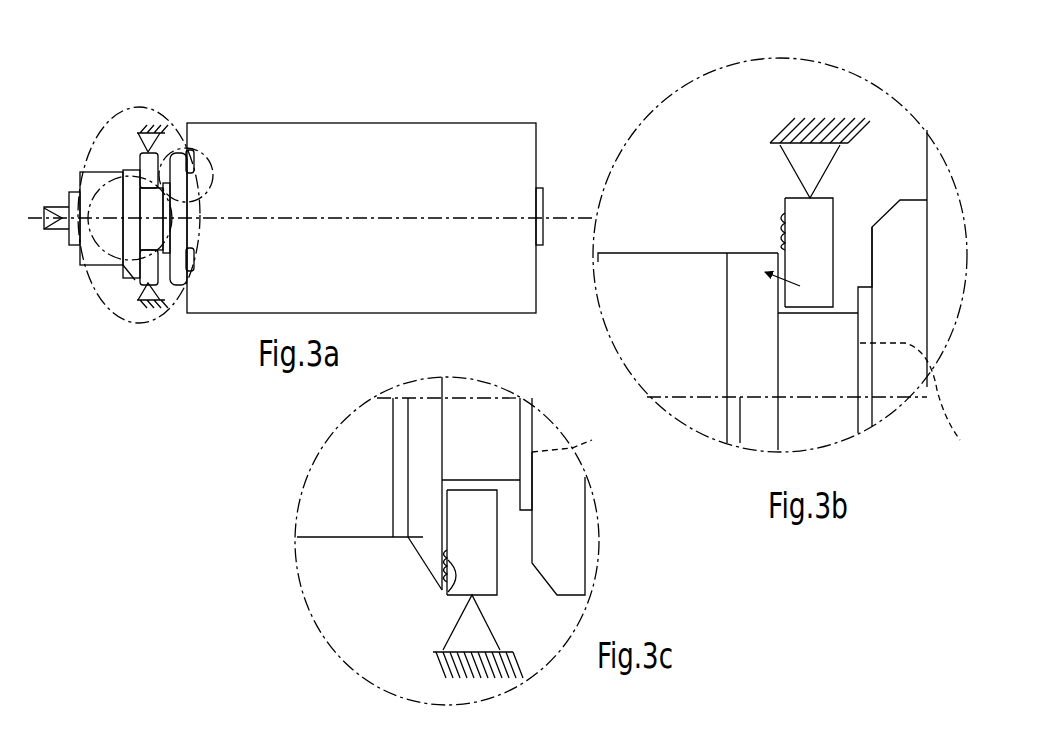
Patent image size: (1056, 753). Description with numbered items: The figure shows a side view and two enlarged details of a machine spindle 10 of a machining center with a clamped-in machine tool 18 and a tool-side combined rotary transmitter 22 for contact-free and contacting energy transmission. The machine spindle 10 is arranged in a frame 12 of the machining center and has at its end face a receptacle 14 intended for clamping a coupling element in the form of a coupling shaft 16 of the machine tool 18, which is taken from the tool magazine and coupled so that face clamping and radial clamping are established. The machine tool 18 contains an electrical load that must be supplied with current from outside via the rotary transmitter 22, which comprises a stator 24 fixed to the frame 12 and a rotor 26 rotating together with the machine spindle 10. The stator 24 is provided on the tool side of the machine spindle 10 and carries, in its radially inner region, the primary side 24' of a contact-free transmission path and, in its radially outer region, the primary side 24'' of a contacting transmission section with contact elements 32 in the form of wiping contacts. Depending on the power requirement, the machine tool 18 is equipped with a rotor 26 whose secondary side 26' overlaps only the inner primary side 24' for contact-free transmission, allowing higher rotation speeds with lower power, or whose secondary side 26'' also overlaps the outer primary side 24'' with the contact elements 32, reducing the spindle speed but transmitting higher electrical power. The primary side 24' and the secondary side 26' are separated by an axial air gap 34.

In FIG. 3A, the machine spindle 10 is at (281, 142).
In FIG. 3B, the machine spindle 10 is at (938, 230).
In FIG. 3C, the machine spindle 10 is at (590, 530).
In FIG. 3A, the frame 12 is at (149, 122).
In FIG. 3B, the frame 12 is at (812, 167).
In FIG. 3C, the frame 12 is at (468, 632).
In FIG. 3A, the receptacle 14 is at (186, 211).
In FIG. 3B, the receptacle 14 is at (927, 385).
In FIG. 3C, the receptacle 14 is at (540, 450).
In FIG. 3A, the coupling shaft 16 is at (159, 197).
In FIG. 3B, the coupling shaft 16 is at (843, 337).
In FIG. 3C, the coupling shaft 16 is at (505, 455).
In FIG. 3A, the machine tool 18 is at (88, 238).
In FIG. 3B, the machine tool 18 is at (645, 278).
In FIG. 3C, the machine tool 18 is at (347, 503).
In FIG. 3A, the rotary transmitter 22 is at (130, 278).
In FIG. 3A, the stator 24 is at (179, 266).
In FIG. 3B, the stator 24 is at (871, 198).
In FIG. 3C, the stator 24 is at (511, 604).
In FIG. 3B, the primary side of contact-free transmission path 24' is at (734, 294).
In FIG. 3B, the primary side of contacting transmission section 24'' is at (760, 198).
In FIG. 3C, the primary side of contacting transmission section 24'' is at (418, 561).
In FIG. 3A, the rotor 26 is at (113, 155).
In FIG. 3B, the rotor 26 is at (696, 348).
In FIG. 3C, the rotor 26 is at (437, 435).
In FIG. 3B, the secondary side of rotor for contact-free transmission 26' is at (733, 297).
In FIG. 3C, the secondary side of rotor for contacting transmission 26'' is at (336, 577).
In FIG. 3B, the contact elements 32 is at (782, 240).
In FIG. 3B, the axial air gap 34 is at (783, 313).